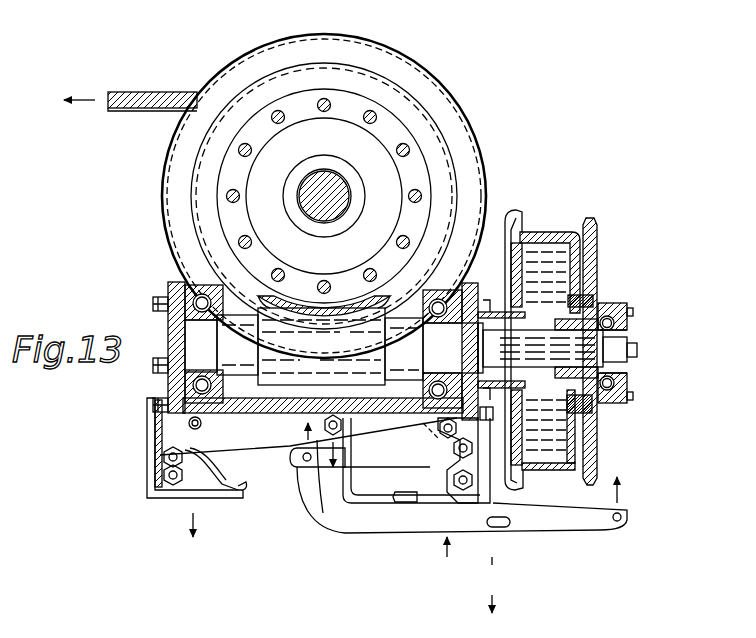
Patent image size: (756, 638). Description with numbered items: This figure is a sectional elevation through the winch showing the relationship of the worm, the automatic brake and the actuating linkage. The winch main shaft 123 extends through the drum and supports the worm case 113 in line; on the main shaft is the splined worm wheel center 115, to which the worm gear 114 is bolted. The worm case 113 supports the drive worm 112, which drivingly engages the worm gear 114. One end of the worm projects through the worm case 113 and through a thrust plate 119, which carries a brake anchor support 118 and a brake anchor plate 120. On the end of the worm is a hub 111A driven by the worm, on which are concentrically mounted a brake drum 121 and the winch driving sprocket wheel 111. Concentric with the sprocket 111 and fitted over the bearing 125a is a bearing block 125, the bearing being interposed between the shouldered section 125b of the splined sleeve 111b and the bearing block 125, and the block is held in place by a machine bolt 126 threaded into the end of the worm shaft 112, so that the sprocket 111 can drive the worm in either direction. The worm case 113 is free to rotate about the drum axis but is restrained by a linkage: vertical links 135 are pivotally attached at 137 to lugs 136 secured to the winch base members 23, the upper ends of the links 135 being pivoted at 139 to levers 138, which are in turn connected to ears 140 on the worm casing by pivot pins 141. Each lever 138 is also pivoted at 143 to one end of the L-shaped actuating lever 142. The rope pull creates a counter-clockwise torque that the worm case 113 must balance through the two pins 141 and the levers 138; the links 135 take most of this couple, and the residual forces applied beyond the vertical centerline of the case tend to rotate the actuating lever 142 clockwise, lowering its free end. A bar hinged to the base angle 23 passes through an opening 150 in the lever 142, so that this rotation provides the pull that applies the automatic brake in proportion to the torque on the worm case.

The winch base member 23 is at (148, 412).
The winch driving sprocket wheel 111 is at (597, 247).
The hub 111A is at (600, 318).
The splined sleeve 111b is at (556, 374).
The drive worm 112 is at (394, 346).
The worm case 113 is at (413, 60).
The worm gear 114 is at (428, 113).
The splined worm wheel center 115 is at (247, 167).
The brake anchor support 118 is at (516, 285).
The thrust plate 119 is at (480, 310).
The brake anchor plate 120 is at (522, 268).
The brake drum 121 is at (552, 472).
The winch main shaft 123 is at (312, 205).
The bearing block 125 is at (628, 390).
The bearing 125a is at (630, 310).
The shouldered section 125b is at (558, 333).
The machine bolt 126 is at (637, 347).
The vertical link 135 is at (160, 467).
The lug 136 is at (190, 482).
The pivot 137 is at (160, 485).
The lever 138 is at (390, 453).
The pivot 139 is at (217, 482).
The ear 140 is at (447, 413).
The pivot pin 141 is at (190, 425).
The actuating lever 142 is at (323, 513).
The pivot 143 is at (307, 443).
The opening 150 is at (520, 533).